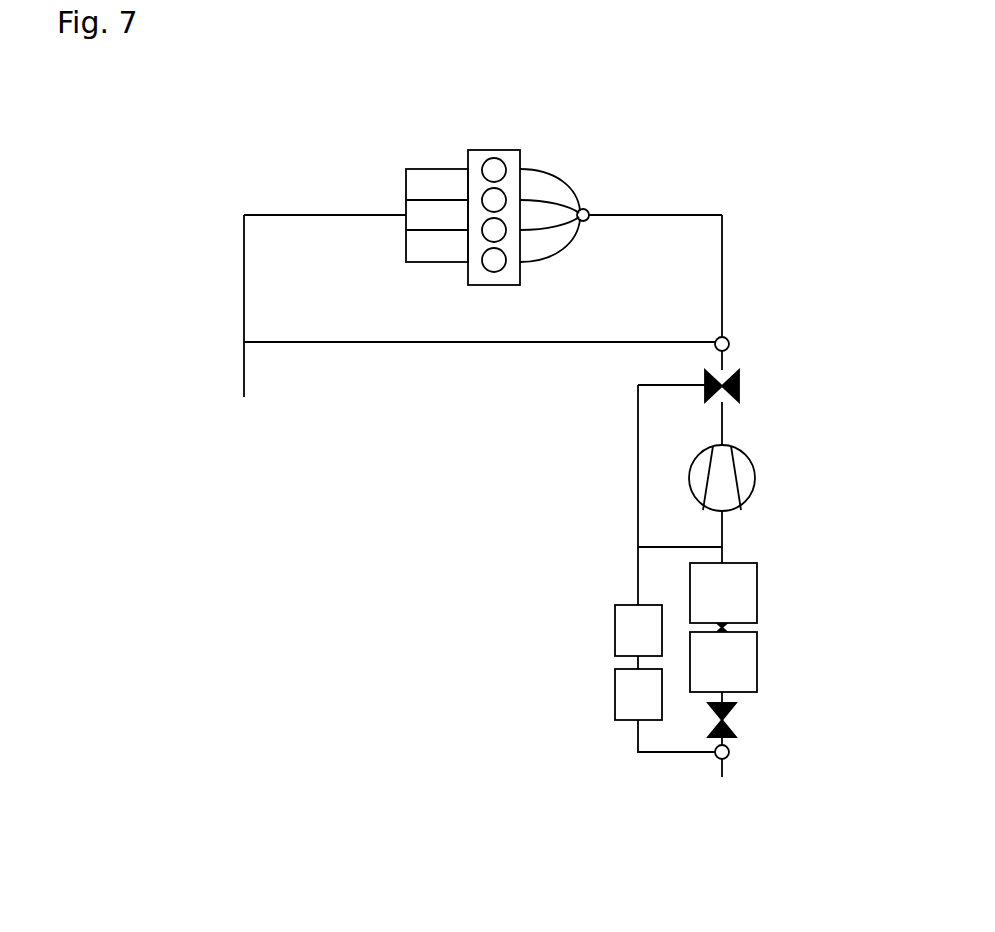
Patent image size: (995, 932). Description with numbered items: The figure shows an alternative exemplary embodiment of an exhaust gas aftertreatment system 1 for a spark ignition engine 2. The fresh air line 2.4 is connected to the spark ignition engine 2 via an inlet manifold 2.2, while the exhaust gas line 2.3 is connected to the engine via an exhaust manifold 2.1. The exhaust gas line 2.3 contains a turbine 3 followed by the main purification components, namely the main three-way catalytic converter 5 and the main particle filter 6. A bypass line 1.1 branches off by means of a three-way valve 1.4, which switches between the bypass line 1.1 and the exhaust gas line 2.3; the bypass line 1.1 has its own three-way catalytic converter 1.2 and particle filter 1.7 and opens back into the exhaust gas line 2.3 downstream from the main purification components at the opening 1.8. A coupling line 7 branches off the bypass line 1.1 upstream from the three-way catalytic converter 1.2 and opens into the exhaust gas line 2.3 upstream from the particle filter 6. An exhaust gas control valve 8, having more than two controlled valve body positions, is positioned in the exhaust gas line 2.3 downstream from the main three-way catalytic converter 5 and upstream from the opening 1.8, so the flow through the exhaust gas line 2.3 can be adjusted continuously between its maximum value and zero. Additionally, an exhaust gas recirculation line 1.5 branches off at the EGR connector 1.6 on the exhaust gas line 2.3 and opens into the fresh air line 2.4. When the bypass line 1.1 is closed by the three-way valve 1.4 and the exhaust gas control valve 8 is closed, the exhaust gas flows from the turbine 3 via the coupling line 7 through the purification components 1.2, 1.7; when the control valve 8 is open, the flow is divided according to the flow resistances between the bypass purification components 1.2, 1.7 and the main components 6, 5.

The exhaust gas aftertreatment system 1 is at (792, 172).
The spark ignition engine 2 is at (511, 160).
The exhaust manifold 2.1 is at (562, 177).
The inlet manifold 2.2 is at (430, 169).
The exhaust gas line 2.3 is at (722, 228).
The fresh air line 2.4 is at (244, 295).
The bypass line 1.1 is at (638, 400).
The three-way catalytic converter 1.2 is at (638, 637).
The three-way valve 1.4 is at (740, 386).
The exhaust gas recirculation line 1.5 is at (298, 342).
The EGR connector 1.6 is at (729, 341).
The particle filter 1.7 is at (665, 710).
The opening 1.8 is at (730, 752).
The turbine 3 is at (748, 471).
The main three-way catalytic converter 5 is at (723, 593).
The main particle filter 6 is at (723, 667).
The coupling line 7 is at (690, 545).
The exhaust gas control valve 8 is at (736, 719).